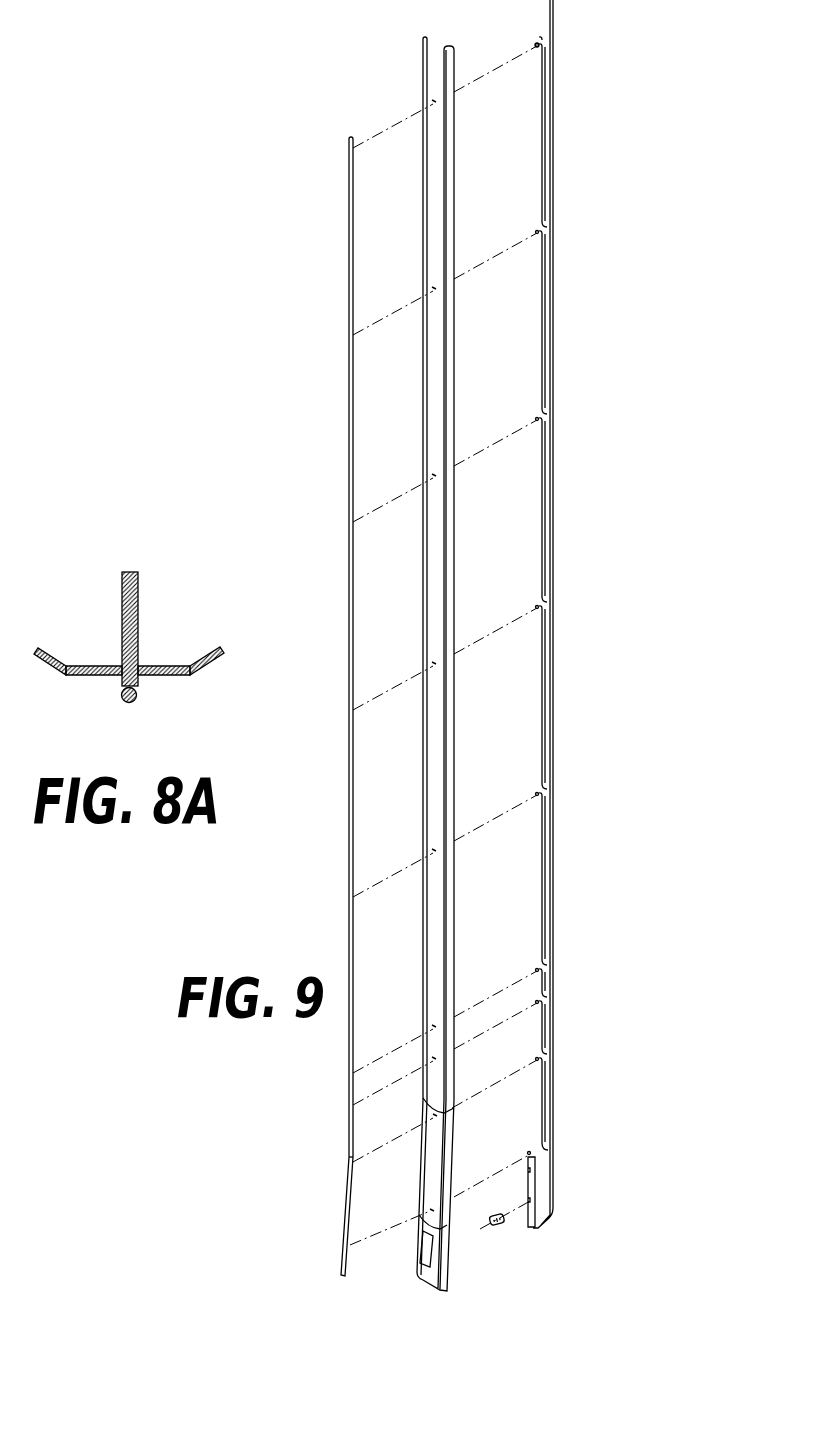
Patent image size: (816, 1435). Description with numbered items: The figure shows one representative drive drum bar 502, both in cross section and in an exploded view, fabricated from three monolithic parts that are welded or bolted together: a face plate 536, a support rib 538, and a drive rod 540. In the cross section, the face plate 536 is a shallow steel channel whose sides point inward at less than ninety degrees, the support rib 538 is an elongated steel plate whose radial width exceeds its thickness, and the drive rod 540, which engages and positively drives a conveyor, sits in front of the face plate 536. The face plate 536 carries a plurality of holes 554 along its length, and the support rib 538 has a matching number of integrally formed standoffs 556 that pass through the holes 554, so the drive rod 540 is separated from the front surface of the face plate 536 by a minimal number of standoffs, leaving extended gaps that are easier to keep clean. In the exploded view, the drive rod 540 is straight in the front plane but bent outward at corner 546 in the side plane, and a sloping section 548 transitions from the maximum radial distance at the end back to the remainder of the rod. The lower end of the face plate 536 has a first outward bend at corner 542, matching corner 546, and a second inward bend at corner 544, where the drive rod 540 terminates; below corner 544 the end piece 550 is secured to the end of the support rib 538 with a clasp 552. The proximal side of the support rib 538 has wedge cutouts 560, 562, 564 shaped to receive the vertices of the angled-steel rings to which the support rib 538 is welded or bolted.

In FIG. 8A, the drive drum bar 502 is at (143, 660).
In FIG. 9, the drive drum bar 502 is at (439, 653).
In FIG. 8A, the face plate 536 is at (200, 668).
In FIG. 8A, the support rib 538 is at (140, 592).
In FIG. 9, the support rib 538 is at (555, 12).
In FIG. 8A, the drive rod 540 is at (136, 700).
In FIG. 9, the drive rod 540 is at (350, 246).
In FIG. 9, the corner 542 is at (447, 1110).
In FIG. 9, the corner 544 is at (440, 1232).
In FIG. 9, the corner 546 is at (352, 1156).
In FIG. 9, the sloping section 548 is at (346, 1212).
In FIG. 9, the end piece 550 is at (447, 1270).
In FIG. 9, the clasp 552 is at (504, 1226).
In FIG. 8A, the holes 554 is at (150, 665).
In FIG. 9, the holes 554 is at (447, 0).
In FIG. 8A, the standoffs 556 is at (115, 671).
In FIG. 9, the standoffs 556 is at (537, 43).
In FIG. 9, the wedge cutout 560 is at (550, 120).
In FIG. 9, the wedge cutout 562 is at (550, 640).
In FIG. 9, the wedge cutout 564 is at (553, 1164).